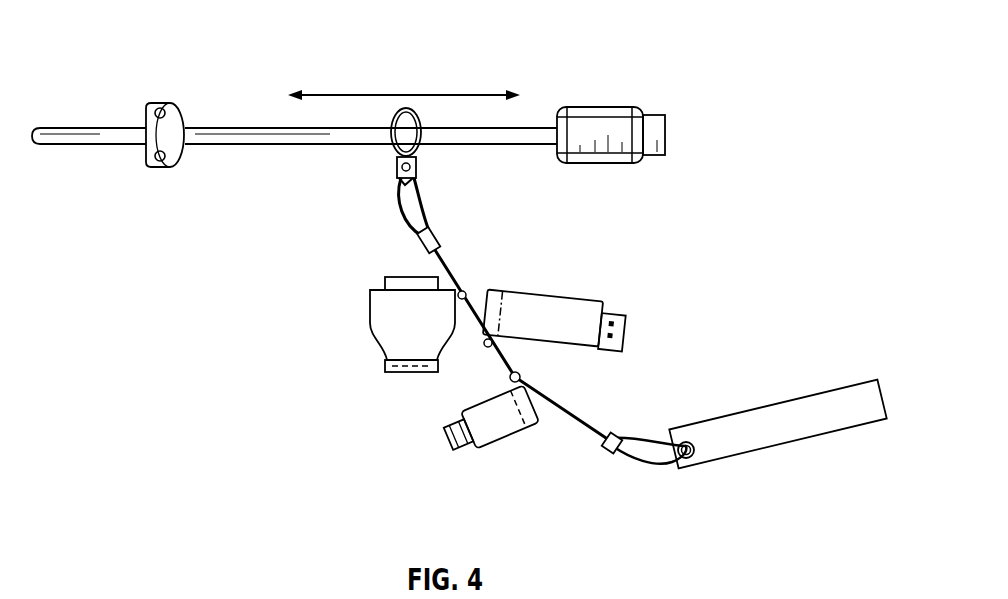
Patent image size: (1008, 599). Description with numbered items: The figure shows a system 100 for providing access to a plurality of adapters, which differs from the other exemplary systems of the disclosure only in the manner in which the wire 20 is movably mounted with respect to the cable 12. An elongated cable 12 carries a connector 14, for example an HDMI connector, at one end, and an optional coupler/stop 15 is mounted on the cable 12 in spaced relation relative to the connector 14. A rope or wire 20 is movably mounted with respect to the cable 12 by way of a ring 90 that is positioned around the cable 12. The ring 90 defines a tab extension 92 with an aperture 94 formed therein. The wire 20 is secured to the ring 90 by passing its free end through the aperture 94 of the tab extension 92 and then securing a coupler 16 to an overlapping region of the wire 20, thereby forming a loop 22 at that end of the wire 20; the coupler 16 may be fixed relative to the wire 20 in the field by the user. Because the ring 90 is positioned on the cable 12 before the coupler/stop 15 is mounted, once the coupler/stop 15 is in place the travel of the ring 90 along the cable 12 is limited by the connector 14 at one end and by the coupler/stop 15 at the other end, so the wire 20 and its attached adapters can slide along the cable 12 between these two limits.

The system 100 is at (575, 42).
The elongated cable 12 is at (256, 130).
The connector 14 is at (590, 125).
The coupler/stop 15 is at (165, 103).
The coupler 16 is at (440, 240).
The wire 20 is at (560, 410).
The loop 22 is at (428, 212).
The ring 90 is at (392, 135).
The tab extension 92 is at (420, 165).
The aperture 94 is at (397, 172).